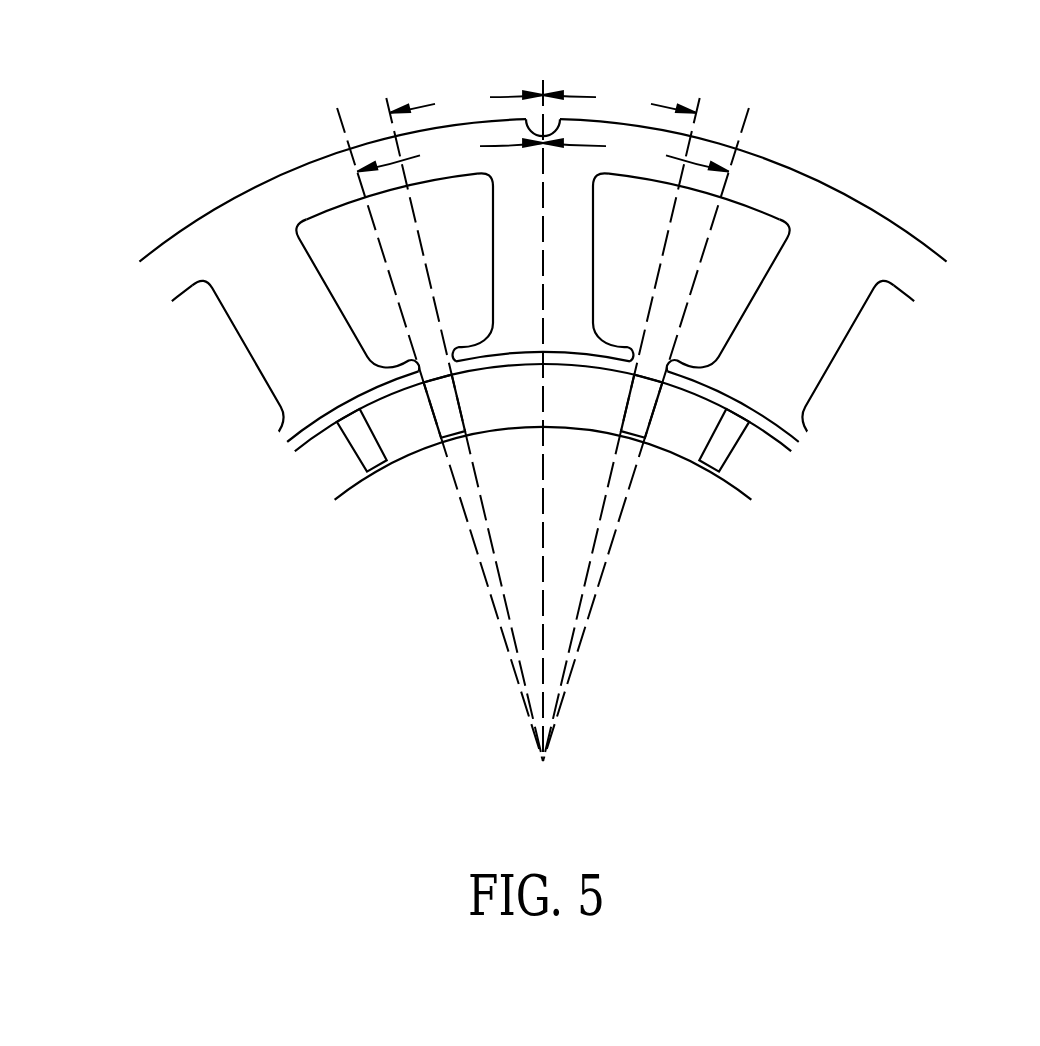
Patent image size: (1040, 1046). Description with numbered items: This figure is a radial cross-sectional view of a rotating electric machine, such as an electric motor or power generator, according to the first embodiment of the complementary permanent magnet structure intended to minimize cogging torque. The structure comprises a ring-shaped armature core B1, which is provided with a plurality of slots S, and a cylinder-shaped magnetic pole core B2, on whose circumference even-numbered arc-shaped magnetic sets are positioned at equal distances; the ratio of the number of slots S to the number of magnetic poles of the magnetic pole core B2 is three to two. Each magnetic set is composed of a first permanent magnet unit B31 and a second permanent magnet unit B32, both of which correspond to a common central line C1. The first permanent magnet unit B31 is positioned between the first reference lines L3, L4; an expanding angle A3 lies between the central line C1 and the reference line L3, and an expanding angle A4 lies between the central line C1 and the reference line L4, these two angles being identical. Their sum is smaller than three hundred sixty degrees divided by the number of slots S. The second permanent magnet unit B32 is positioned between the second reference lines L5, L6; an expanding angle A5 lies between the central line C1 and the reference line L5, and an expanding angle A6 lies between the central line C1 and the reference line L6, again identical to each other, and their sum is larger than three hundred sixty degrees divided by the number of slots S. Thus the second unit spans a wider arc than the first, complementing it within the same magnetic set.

The central line C1 is at (541, 397).
The first reference line L3 is at (451, 403).
The first reference line L4 is at (634, 403).
The second reference line L5 is at (428, 411).
The second reference line L6 is at (659, 410).
The expanding angle A3 is at (466, 96).
The expanding angle A4 is at (619, 96).
The expanding angle A5 is at (450, 147).
The expanding angle A6 is at (636, 147).
The armature core B1 is at (543, 267).
The first permanent magnet unit B31 is at (543, 463).
The second permanent magnet unit B32 is at (445, 412).
The magnetic pole core B2 is at (543, 510).
The slot S is at (750, 247).